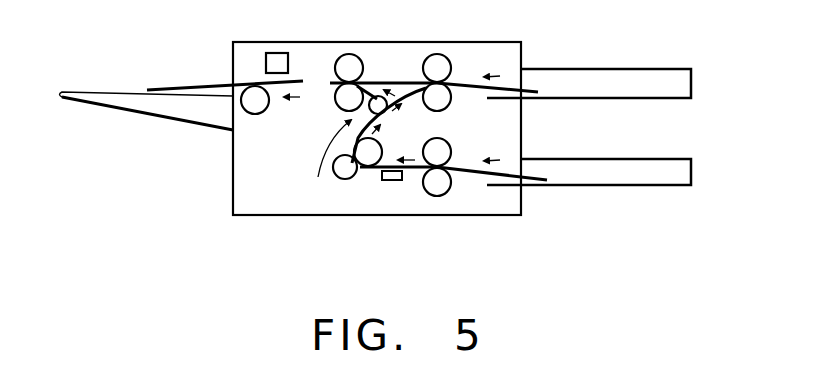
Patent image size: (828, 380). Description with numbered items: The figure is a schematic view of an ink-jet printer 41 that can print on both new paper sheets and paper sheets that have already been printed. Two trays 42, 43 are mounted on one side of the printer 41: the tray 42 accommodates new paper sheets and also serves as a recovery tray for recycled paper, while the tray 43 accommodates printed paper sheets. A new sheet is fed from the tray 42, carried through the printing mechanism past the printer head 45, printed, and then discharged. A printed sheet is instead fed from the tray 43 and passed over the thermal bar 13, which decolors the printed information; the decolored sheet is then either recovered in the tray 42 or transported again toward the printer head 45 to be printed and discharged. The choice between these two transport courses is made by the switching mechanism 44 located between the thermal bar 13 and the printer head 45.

The thermal bar 13 is at (391, 183).
The printer 41 is at (233, 186).
The tray 42 is at (691, 83).
The tray 43 is at (691, 182).
The switching mechanism 44 is at (322, 158).
The printer head 45 is at (277, 53).